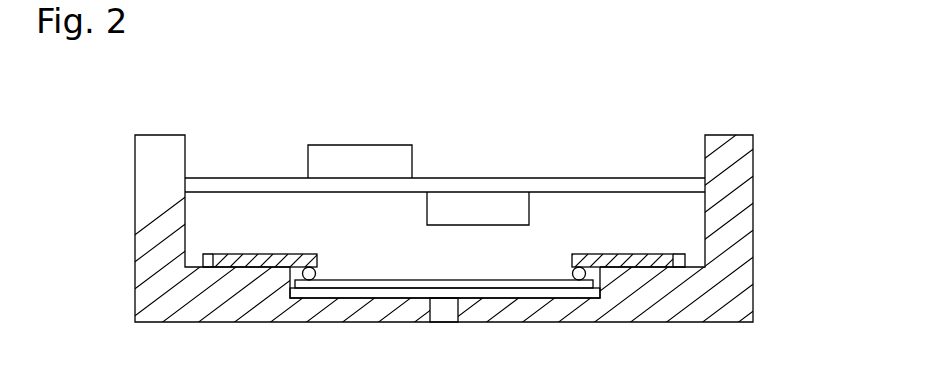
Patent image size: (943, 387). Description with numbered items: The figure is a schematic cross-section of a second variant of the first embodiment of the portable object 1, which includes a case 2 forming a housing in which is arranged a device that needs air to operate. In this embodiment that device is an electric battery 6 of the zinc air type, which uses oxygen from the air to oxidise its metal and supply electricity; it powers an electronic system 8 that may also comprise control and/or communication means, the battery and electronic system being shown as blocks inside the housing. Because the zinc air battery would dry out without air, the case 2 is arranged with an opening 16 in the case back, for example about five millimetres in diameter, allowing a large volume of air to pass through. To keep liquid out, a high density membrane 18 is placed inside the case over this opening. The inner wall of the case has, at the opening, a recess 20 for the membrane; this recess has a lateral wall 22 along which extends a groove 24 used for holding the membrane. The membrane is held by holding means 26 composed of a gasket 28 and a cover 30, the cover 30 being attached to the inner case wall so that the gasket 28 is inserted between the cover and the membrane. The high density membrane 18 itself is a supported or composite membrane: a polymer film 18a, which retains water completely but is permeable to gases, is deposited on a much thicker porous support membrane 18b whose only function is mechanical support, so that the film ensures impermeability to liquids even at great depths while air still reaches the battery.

The portable object 1 is at (110, 118).
The case 2 is at (123, 248).
The electric battery 6 is at (478, 208).
The electronic system 8 is at (360, 161).
The opening 16 is at (444, 318).
The high density membrane 18 is at (402, 272).
The film 18a is at (372, 290).
The support membrane 18b is at (516, 280).
The recess 20 is at (340, 262).
The lateral wall 22 is at (289, 270).
The groove 24 is at (291, 297).
The holding means 26 is at (566, 248).
The gasket 28 is at (583, 281).
The cover 30 is at (652, 258).